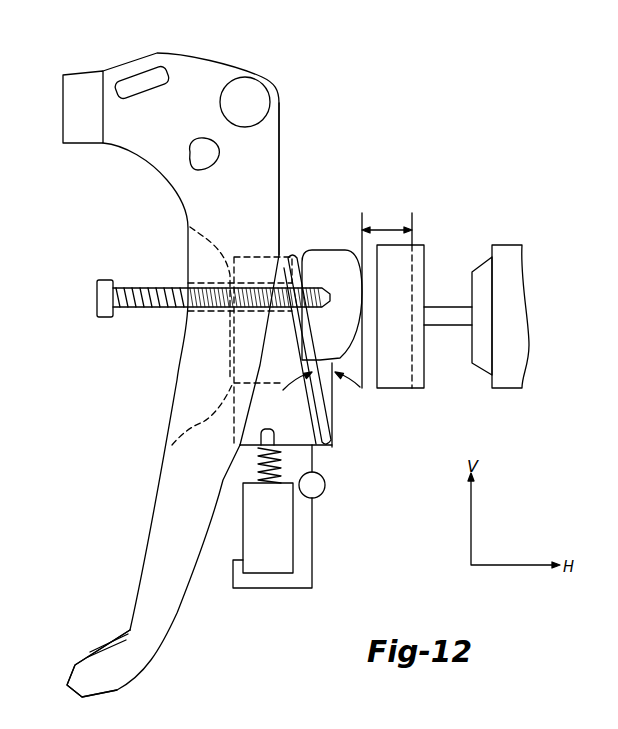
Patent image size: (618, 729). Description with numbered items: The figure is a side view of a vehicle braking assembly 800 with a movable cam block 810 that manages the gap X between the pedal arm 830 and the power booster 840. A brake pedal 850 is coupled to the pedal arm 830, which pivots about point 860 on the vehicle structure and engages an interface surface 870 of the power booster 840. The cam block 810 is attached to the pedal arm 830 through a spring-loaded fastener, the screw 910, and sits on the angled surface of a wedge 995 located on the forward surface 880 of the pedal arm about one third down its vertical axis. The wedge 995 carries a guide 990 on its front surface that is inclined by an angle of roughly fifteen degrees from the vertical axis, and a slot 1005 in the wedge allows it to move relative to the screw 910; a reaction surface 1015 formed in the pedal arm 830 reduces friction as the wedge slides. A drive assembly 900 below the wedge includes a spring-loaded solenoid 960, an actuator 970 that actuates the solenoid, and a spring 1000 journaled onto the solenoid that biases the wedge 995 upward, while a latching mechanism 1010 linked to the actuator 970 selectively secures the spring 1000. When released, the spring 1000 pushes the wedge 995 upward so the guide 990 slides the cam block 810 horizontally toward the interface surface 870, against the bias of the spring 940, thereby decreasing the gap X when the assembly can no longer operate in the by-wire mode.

The vehicle braking assembly 800 is at (420, 45).
The cam block 810 is at (309, 257).
The pedal arm 830 is at (258, 143).
The power booster 840 is at (456, 368).
The brake pedal 850 is at (78, 665).
The pivot point 860 is at (247, 93).
The interface surface 870 is at (413, 345).
The forward surface 880 is at (284, 170).
The drive assembly 900 is at (307, 528).
The screw 910 is at (216, 311).
The spring 940 is at (150, 288).
The solenoid 960 is at (268, 428).
The actuator 970 is at (233, 561).
The guide 990 is at (327, 428).
The wedge 995 is at (313, 412).
The spring 1000 is at (281, 458).
The slot 1005 is at (255, 283).
The latching mechanism 1010 is at (325, 485).
The reaction surface 1015 is at (203, 426).